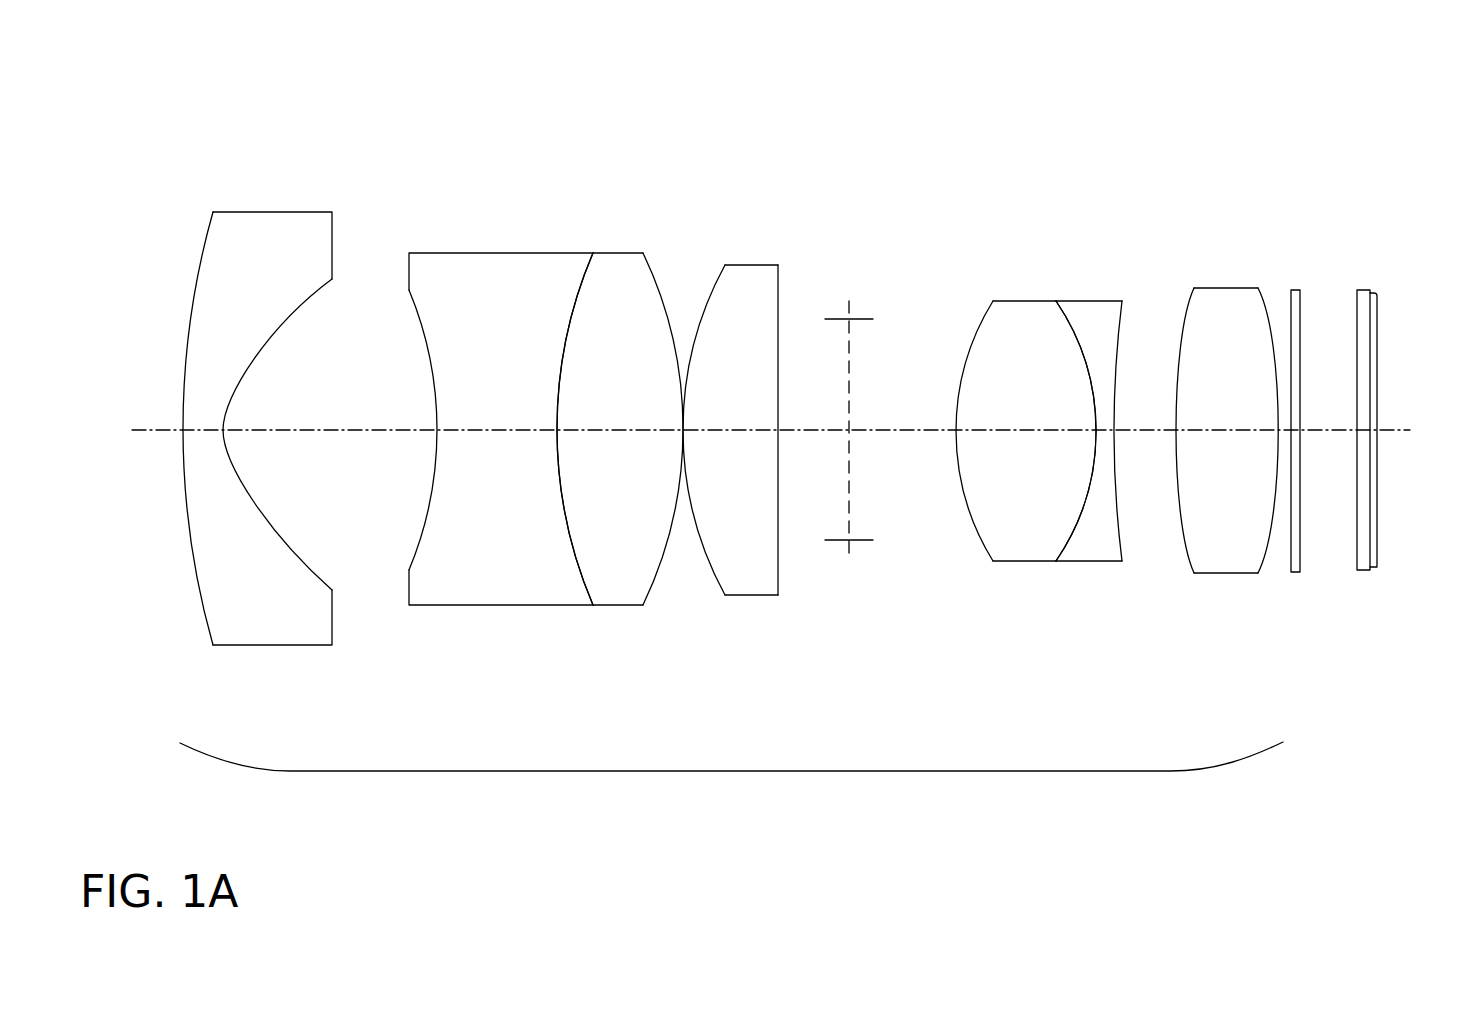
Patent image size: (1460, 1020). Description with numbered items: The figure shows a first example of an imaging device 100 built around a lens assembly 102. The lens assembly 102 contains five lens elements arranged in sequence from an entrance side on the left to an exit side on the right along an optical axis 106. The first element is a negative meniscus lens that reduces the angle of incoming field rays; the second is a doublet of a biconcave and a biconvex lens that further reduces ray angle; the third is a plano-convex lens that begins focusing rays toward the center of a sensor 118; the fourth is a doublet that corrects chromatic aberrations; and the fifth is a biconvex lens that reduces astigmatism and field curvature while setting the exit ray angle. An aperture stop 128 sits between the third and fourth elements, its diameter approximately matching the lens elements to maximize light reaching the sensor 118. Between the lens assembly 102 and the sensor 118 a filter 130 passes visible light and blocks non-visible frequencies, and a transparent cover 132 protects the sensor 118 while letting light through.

The imaging device 100 is at (193, 80).
The lens assembly 102 is at (730, 771).
The optical axis 106 is at (132, 430).
The sensor 118 is at (1377, 318).
The aperture stop 128 is at (849, 555).
The filter 130 is at (1297, 290).
The cover 132 is at (1363, 570).